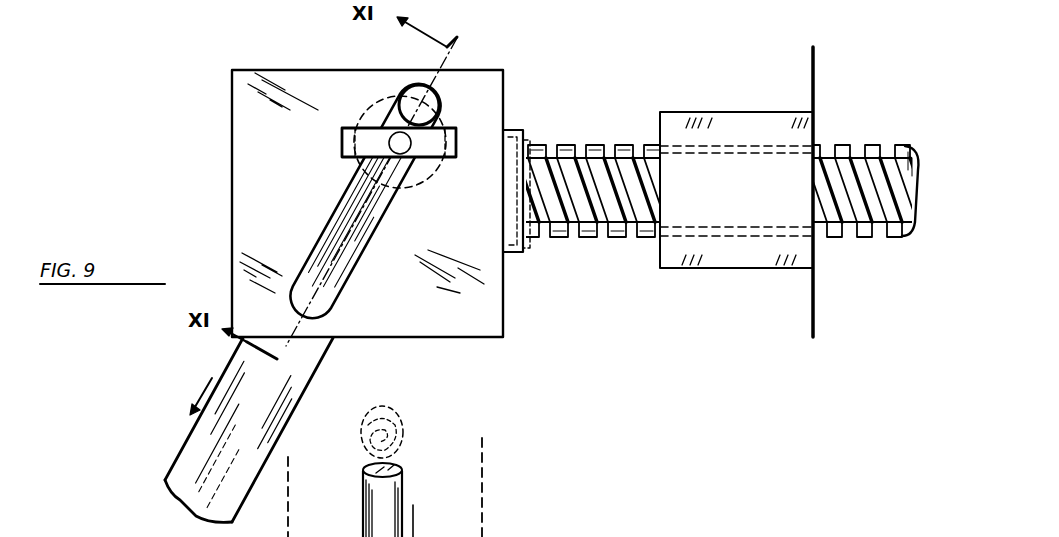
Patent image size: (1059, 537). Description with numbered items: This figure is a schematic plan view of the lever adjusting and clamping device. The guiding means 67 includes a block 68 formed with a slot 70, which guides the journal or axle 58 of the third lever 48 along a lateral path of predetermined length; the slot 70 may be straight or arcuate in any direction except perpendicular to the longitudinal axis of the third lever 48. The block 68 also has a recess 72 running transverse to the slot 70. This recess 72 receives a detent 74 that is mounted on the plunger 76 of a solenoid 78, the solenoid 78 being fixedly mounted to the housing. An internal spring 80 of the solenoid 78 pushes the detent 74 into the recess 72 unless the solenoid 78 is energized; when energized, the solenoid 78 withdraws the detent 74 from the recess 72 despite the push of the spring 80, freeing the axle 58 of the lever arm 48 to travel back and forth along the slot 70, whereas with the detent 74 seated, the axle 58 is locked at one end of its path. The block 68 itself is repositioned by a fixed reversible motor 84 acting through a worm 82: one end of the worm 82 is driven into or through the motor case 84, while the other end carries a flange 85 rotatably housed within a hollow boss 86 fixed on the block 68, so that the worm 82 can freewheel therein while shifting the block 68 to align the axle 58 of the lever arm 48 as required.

The third lever 48 is at (241, 350).
The journal 58 is at (412, 100).
The guiding means 67 is at (702, 59).
The block 68 is at (232, 152).
The slot 70 is at (331, 298).
The recess 72 is at (350, 130).
The detent 74 is at (455, 128).
The plunger 76 is at (432, 142).
The solenoid 78 is at (484, 494).
The spring 80 is at (412, 430).
The worm 82 is at (596, 235).
The motor 84 is at (753, 113).
The flange 85 is at (515, 253).
The hollow boss 86 is at (523, 131).